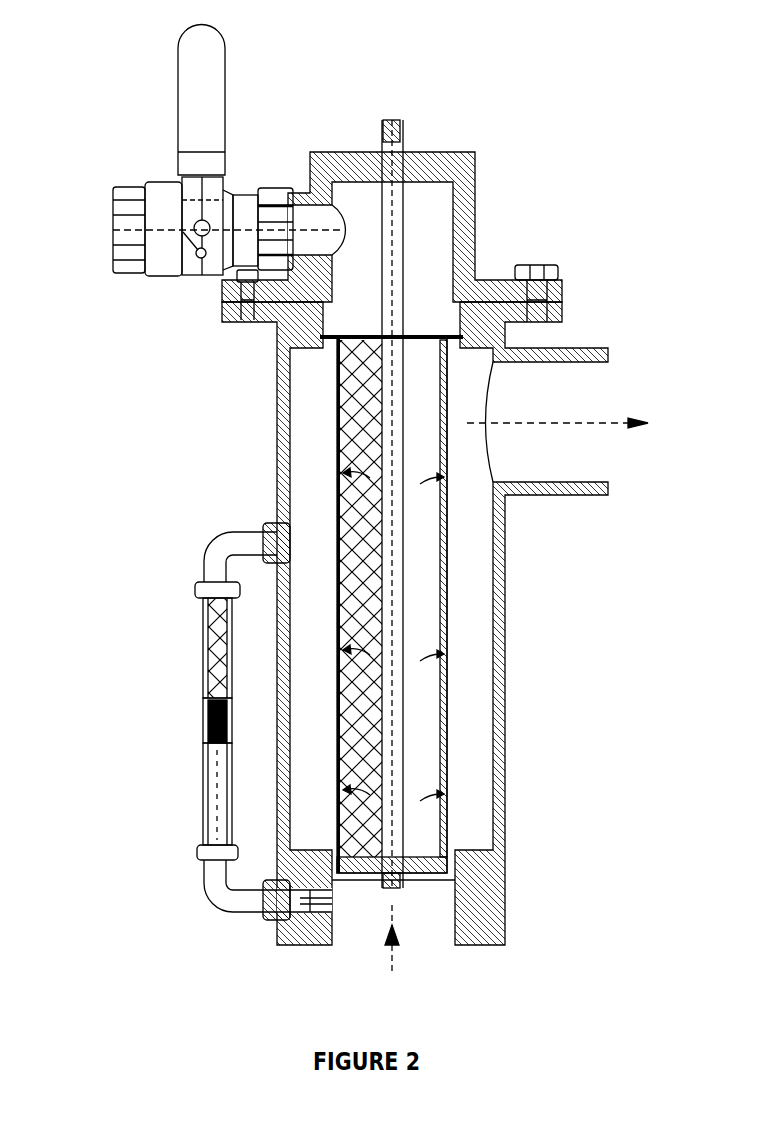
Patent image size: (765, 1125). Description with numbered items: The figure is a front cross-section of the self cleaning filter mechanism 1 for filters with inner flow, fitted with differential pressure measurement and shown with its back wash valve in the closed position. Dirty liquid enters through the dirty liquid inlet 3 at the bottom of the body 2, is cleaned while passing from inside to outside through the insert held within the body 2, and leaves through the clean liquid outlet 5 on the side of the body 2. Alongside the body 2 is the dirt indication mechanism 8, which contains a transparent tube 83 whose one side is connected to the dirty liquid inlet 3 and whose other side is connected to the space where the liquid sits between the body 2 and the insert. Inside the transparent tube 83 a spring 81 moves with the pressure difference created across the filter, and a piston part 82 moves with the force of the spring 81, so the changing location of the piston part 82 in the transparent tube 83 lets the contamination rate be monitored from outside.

The self cleaning filter mechanism 1 is at (125, 92).
The body 2 is at (485, 870).
The dirty liquid inlet 3 is at (368, 935).
The clean liquid outlet 5 is at (560, 402).
The dirt indication mechanism 8 is at (193, 535).
The spring 81 is at (205, 668).
The piston part 82 is at (205, 725).
The transparent tube 83 is at (205, 830).